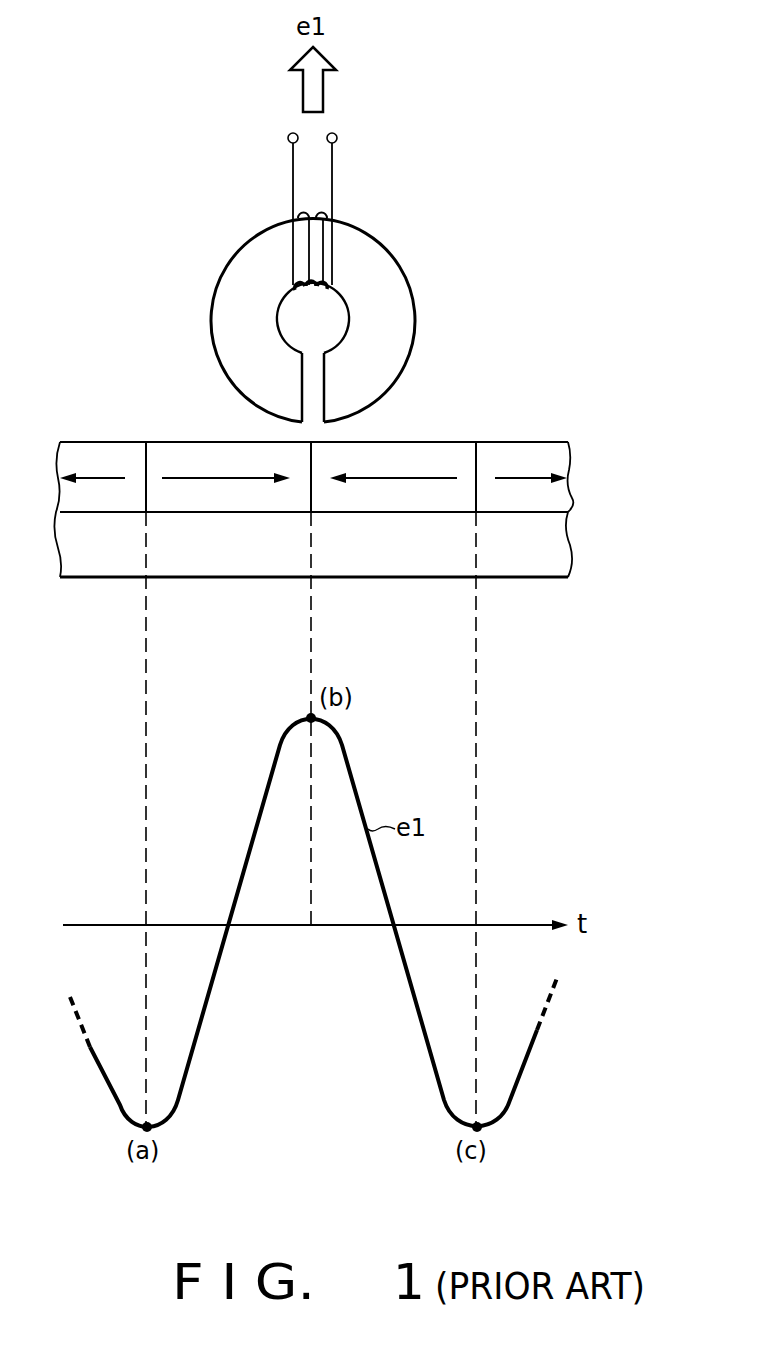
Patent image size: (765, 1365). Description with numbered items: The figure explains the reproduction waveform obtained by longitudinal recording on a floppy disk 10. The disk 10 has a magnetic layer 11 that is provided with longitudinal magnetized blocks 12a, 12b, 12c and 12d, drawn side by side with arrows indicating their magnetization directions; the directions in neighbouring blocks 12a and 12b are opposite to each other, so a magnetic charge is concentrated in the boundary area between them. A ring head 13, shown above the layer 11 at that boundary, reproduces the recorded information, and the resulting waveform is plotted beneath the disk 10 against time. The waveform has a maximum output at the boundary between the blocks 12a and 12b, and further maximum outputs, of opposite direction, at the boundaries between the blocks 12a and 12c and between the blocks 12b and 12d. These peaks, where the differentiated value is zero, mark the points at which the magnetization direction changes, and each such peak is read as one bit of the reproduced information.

The floppy disk 10 is at (571, 541).
The magnetic layer 11 is at (456, 442).
The longitudinal magnetized block 12a is at (210, 455).
The longitudinal magnetized block 12b is at (437, 453).
The longitudinal magnetized block 12c is at (106, 452).
The longitudinal magnetized block 12d is at (540, 452).
The ring head 13 is at (392, 275).